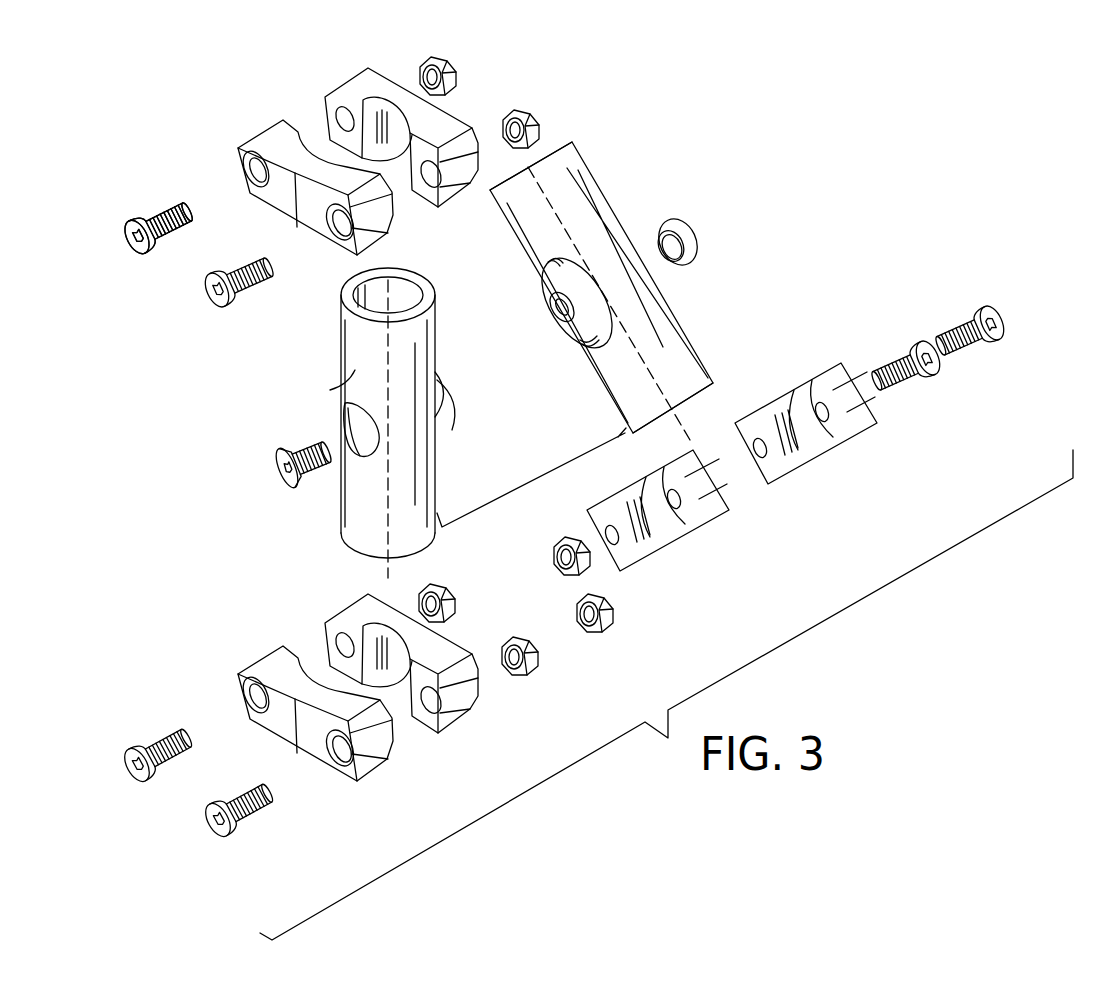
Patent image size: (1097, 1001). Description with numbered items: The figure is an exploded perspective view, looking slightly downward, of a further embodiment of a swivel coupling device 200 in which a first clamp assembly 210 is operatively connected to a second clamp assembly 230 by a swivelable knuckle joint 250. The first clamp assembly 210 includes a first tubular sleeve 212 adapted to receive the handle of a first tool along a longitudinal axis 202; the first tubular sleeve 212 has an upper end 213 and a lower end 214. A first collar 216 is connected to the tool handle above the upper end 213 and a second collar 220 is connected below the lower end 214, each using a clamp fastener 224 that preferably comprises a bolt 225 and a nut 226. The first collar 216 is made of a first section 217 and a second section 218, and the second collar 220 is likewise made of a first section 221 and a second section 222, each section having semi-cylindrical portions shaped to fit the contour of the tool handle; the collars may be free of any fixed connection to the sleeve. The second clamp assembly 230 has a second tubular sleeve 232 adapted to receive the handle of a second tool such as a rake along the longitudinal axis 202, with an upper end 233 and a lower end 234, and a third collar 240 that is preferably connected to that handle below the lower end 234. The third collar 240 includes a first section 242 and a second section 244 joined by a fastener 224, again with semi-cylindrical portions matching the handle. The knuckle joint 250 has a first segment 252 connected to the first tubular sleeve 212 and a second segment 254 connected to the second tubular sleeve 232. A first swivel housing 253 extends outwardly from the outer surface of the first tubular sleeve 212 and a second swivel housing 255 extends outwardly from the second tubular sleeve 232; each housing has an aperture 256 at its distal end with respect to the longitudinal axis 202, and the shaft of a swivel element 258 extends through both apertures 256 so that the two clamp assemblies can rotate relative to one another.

The swivel coupling device 200 is at (262, 98).
The longitudinal axis 202 is at (695, 414).
The first clamp assembly 210 is at (306, 401).
The first tubular sleeve 212 is at (391, 401).
The upper end 213 is at (405, 268).
The lower end 214 is at (348, 540).
The first collar 216 is at (274, 142).
The first section 217 is at (250, 138).
The second section 218 is at (362, 82).
The second collar 220 is at (342, 732).
The first section 221 is at (275, 722).
The second section 222 is at (468, 700).
The clamp fastener 224 is at (207, 280).
The bolt 225 is at (165, 210).
The nut 226 is at (522, 112).
The second clamp assembly 230 is at (618, 293).
The second tubular sleeve 232 is at (676, 295).
The upper end 233 is at (555, 148).
The lower end 234 is at (658, 415).
The third collar 240 is at (784, 484).
The first section 242 is at (665, 530).
The second section 244 is at (802, 452).
The swivelable knuckle joint 250 is at (520, 485).
The first segment 252 is at (482, 431).
The first swivel housing 253 is at (445, 410).
The second segment 254 is at (548, 268).
The second swivel housing 255 is at (585, 336).
The aperture 256 is at (445, 388).
The swivel element 258 is at (700, 238).